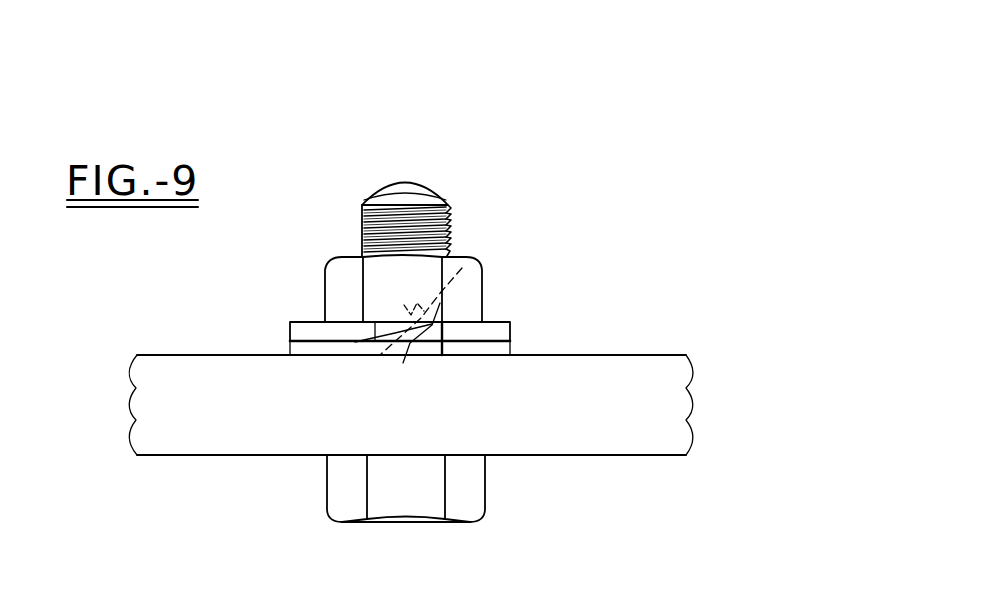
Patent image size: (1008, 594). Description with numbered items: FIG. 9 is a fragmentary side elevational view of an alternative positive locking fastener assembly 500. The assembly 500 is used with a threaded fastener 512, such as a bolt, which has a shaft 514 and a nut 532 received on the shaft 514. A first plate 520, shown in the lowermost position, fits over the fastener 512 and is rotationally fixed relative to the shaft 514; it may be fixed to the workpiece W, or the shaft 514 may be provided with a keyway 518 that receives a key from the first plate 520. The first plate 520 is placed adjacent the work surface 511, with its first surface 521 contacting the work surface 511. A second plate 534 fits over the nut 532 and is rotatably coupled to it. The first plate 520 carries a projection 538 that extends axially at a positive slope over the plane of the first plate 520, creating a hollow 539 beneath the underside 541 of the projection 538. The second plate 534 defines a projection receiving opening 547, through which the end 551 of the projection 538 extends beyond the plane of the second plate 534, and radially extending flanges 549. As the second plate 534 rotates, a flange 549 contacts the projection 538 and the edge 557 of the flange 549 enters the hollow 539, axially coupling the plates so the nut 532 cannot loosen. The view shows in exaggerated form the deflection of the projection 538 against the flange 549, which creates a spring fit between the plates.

The positive locking fastener assembly 500 is at (542, 209).
The work surface 511 is at (225, 353).
The workpiece W is at (158, 375).
The threaded fastener 512 is at (383, 186).
The shaft 514 is at (362, 216).
The keyway 518 is at (447, 206).
The nut 532 is at (330, 258).
The second plate 534 is at (512, 330).
The first plate 520 is at (512, 348).
The flange 549 is at (292, 334).
The first surface 521 is at (312, 356).
The projection receiving opening 547 is at (381, 323).
The end of projection 551 is at (442, 320).
The edge of flange 557 is at (438, 326).
The projection 538 is at (434, 328).
The underside of projection 541 is at (407, 365).
The hollow 539 is at (418, 357).